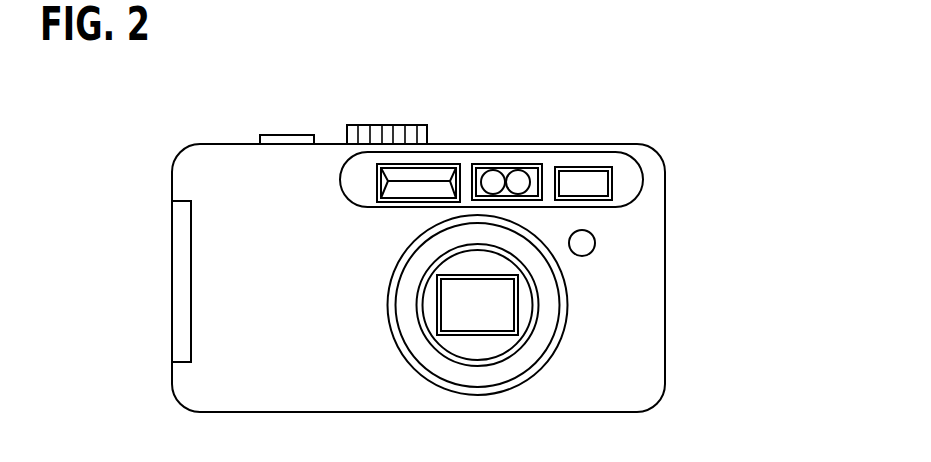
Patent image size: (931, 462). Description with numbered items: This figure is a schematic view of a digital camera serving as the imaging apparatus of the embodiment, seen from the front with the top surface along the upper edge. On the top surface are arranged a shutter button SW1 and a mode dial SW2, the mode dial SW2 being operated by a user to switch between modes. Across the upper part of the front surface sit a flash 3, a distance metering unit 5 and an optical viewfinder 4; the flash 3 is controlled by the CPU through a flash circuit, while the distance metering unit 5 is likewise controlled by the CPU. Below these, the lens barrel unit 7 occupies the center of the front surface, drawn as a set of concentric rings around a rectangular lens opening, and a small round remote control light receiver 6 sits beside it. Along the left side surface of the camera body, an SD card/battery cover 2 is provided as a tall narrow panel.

The SD card/battery cover 2 is at (180, 255).
The flash 3 is at (428, 176).
The optical viewfinder 4 is at (582, 185).
The distance metering unit 5 is at (508, 173).
The remote control light receiver 6 is at (595, 243).
The lens barrel unit 7 is at (492, 340).
The shutter button SW1 is at (286, 133).
The mode dial SW2 is at (373, 123).